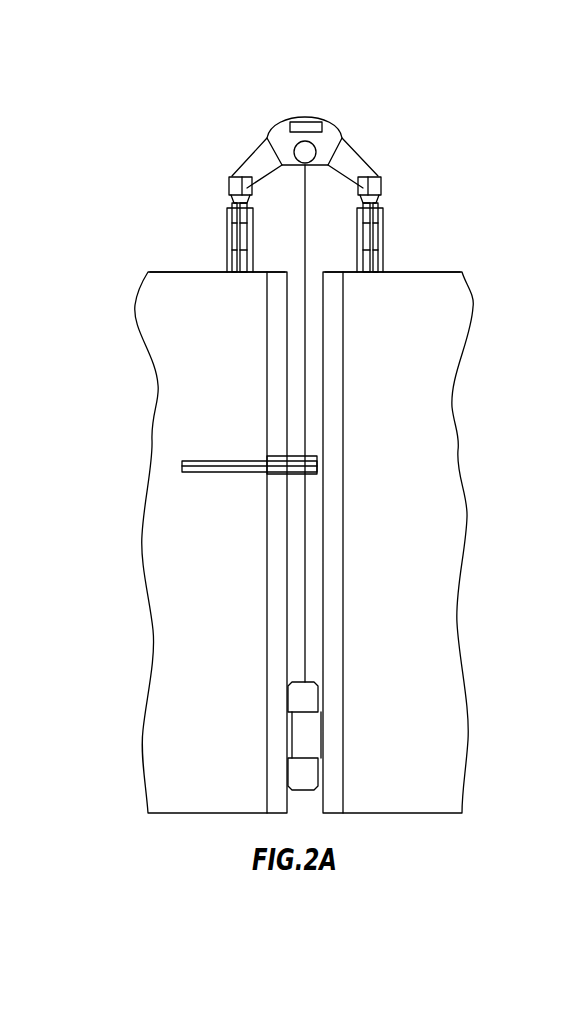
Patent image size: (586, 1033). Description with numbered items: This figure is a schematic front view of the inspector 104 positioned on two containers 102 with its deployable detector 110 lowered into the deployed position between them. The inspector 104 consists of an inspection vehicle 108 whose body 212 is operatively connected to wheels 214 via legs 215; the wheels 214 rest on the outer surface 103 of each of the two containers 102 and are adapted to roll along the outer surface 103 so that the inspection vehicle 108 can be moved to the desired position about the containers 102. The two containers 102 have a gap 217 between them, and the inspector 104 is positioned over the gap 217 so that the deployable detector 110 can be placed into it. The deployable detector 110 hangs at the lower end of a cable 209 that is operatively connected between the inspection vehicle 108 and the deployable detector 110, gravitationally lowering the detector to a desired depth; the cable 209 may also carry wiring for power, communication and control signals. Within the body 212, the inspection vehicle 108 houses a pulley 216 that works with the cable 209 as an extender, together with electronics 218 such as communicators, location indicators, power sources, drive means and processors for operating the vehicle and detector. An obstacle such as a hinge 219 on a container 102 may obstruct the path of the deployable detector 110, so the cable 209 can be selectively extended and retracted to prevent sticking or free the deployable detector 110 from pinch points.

The container 102 is at (178, 702).
The outer surface 103 is at (178, 271).
The inspector 104 is at (422, 144).
The inspection vehicle 108 is at (219, 200).
The deployable detector 110 is at (323, 737).
The cable 209 is at (305, 365).
The body 212 is at (277, 128).
The wheels 214 is at (226, 222).
The legs 215 is at (229, 177).
The pulley 216 is at (340, 128).
The gap 217 is at (322, 497).
The electronics 218 is at (307, 123).
The hinge 219 is at (285, 475).